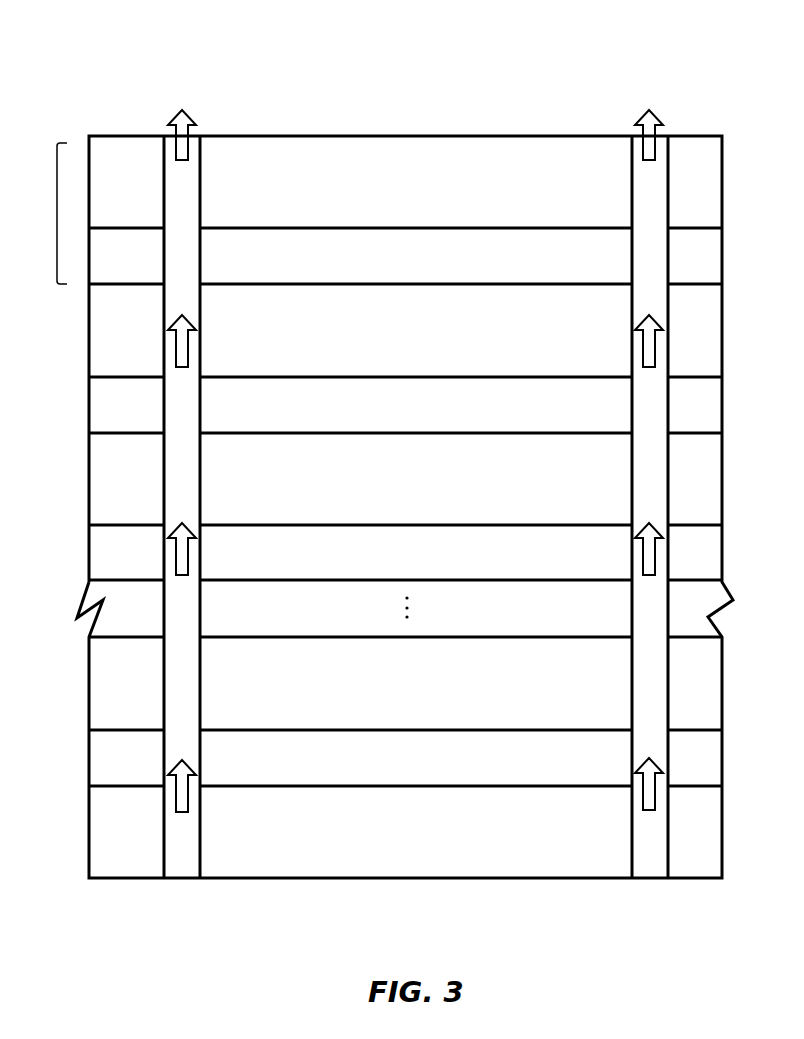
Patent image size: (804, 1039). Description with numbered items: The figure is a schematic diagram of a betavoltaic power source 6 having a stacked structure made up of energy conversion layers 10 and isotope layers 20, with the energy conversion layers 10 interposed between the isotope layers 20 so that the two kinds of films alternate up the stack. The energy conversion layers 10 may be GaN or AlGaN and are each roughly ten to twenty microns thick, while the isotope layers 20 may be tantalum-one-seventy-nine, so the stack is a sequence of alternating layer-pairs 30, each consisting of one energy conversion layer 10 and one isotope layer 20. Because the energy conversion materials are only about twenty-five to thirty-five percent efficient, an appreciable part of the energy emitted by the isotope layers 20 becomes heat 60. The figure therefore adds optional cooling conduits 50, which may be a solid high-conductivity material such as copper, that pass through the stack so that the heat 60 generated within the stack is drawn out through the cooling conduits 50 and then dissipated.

The betavoltaic power source 6 is at (97, 66).
The energy conversion layer 10 is at (419, 196).
The isotope layer 20 is at (421, 268).
The layer-pair 30 is at (57, 212).
The cooling conduit 50 is at (202, 187).
The heat 60 is at (185, 110).